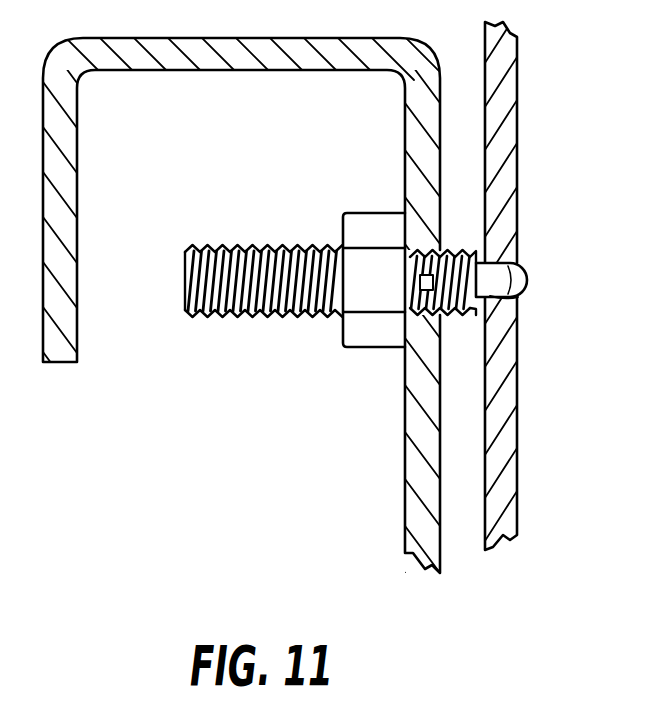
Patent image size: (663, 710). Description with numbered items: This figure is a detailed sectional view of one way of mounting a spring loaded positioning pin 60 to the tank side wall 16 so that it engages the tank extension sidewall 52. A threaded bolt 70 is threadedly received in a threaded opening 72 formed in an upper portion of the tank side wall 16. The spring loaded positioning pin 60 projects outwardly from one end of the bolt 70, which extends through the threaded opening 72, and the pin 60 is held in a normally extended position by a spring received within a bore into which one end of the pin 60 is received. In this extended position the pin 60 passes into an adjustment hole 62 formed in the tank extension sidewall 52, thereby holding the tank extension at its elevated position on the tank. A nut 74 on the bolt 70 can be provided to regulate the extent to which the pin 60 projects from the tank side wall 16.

The tank side wall 16 is at (418, 531).
The tank extension sidewall 52 is at (512, 428).
The positioning pin 60 is at (517, 282).
The adjustment hole 62 is at (518, 298).
The threaded bolt 70 is at (240, 247).
The threaded opening 72 is at (430, 246).
The nut 74 is at (361, 297).